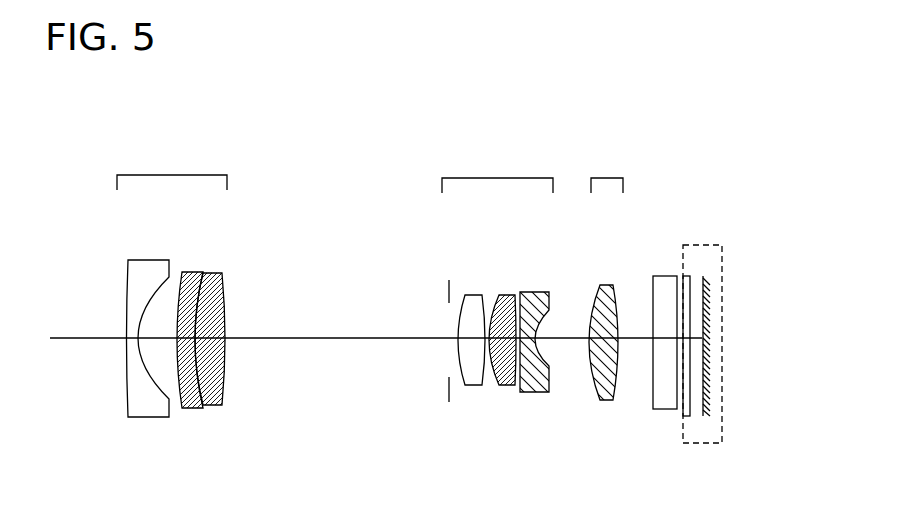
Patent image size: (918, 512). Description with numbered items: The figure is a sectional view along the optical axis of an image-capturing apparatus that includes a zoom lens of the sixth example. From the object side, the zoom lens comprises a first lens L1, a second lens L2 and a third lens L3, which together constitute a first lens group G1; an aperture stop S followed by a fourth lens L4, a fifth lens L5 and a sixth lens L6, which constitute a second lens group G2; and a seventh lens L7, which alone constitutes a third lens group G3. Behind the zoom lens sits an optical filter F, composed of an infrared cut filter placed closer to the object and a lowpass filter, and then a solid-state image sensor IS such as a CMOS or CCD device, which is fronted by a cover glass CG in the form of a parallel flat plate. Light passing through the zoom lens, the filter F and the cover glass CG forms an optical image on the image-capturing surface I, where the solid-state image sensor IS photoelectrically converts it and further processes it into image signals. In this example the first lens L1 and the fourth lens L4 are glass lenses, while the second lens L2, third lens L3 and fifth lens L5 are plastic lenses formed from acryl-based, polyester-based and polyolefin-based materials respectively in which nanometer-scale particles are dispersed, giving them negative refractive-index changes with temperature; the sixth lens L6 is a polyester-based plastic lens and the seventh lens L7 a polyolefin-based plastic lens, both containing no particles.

The first lens group G1 is at (173, 280).
The second lens group G2 is at (497, 268).
The third lens group G3 is at (606, 274).
The first lens L1 is at (149, 258).
The second lens L2 is at (187, 270).
The third lens L3 is at (221, 272).
The fourth lens L4 is at (472, 293).
The fifth lens L5 is at (505, 293).
The sixth lens L6 is at (537, 291).
The seventh lens L7 is at (606, 284).
The aperture stop S is at (449, 287).
The optical filter F is at (665, 410).
The cover glass CG is at (683, 276).
The image-capturing surface I is at (703, 276).
The solid-state image sensor IS is at (700, 444).